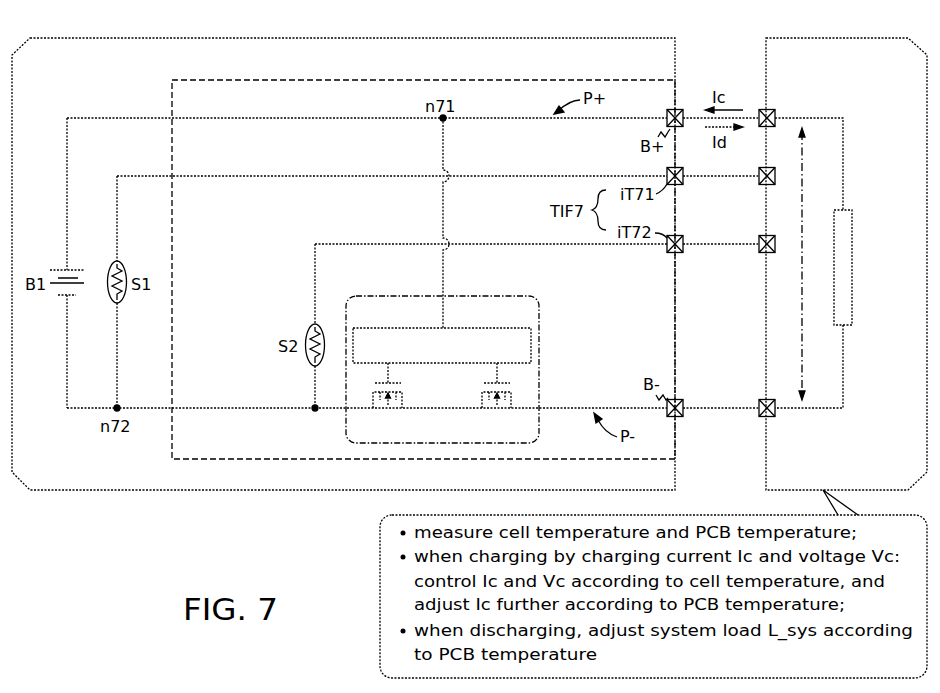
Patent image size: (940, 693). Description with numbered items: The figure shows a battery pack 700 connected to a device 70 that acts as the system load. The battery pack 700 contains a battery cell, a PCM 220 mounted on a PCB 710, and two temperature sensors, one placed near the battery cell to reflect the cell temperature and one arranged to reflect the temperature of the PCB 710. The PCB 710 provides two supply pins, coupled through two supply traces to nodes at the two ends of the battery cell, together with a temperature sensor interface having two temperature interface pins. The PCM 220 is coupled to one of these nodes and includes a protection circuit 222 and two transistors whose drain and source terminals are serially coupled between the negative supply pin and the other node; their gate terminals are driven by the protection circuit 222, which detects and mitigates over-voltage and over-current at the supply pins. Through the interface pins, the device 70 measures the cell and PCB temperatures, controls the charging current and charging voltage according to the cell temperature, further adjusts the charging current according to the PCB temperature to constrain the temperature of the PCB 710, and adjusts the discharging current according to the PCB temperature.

The battery pack 700 is at (392, 38).
The PCB 710 is at (172, 100).
The device 70 is at (828, 38).
The PCM 220 is at (442, 359).
The protection circuit 222 is at (412, 328).